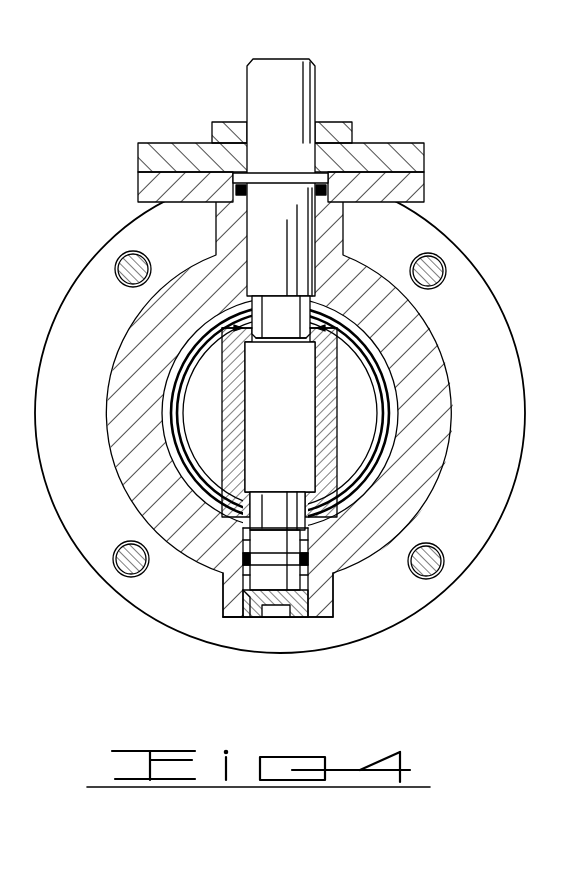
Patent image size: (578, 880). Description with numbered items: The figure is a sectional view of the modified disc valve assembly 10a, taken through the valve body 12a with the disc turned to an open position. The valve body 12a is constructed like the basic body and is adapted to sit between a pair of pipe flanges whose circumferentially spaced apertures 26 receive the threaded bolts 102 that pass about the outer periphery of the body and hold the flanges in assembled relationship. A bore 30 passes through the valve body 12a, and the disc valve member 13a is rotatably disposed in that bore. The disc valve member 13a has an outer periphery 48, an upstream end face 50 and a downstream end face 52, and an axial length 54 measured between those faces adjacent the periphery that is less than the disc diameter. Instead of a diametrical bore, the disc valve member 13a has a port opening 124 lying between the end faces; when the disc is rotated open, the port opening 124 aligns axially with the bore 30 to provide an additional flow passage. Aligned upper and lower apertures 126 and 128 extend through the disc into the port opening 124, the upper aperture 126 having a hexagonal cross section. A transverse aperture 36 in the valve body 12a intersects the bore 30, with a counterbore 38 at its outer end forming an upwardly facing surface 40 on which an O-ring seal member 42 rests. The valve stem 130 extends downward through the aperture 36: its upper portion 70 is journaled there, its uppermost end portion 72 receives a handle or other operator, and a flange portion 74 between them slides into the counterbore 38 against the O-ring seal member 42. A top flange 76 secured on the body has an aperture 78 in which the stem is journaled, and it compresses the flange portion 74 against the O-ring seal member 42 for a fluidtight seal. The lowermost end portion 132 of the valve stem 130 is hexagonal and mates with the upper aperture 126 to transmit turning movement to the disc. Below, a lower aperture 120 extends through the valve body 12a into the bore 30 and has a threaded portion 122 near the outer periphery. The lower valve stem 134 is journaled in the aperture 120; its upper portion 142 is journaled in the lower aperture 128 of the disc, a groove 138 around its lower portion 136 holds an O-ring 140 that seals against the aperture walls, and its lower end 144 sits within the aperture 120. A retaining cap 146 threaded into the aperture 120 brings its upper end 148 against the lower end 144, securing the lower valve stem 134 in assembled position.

The modified disc valve assembly 10a is at (356, 101).
The valve body 12a is at (224, 584).
The disc valve member 13a is at (342, 384).
The apertures 26 is at (122, 262).
The bore 30 is at (205, 505).
The aperture 36 is at (246, 228).
The counterbore 38 is at (235, 179).
The upwardly facing surface 40 is at (326, 190).
The O-ring seal member 42 is at (233, 198).
The outer periphery 48 is at (320, 318).
The upstream end face 50 is at (222, 405).
The downstream end face 52 is at (338, 436).
The axial length 54 is at (280, 340).
The upper portion 70 is at (298, 235).
The uppermost end portion 72 is at (300, 88).
The flange portion 74 is at (297, 181).
The top flange 76 is at (218, 157).
The aperture 78 is at (258, 146).
The threaded bolts 102 is at (128, 285).
The aperture 120 is at (320, 588).
The threaded portion 122 is at (245, 615).
The port opening 124 is at (246, 394).
The upper aperture 126 is at (238, 326).
The lower aperture 128 is at (260, 497).
The valve stem 130 is at (298, 258).
The lowermost end portion 132 is at (326, 330).
The lower valve stem 134 is at (310, 538).
The lower portion 136 is at (250, 545).
The groove 138 is at (244, 588).
The O-ring 140 is at (310, 560).
The upper portion 142 is at (282, 500).
The lower end 144 is at (305, 612).
The retaining cap 146 is at (270, 617).
The upper end 148 is at (242, 600).